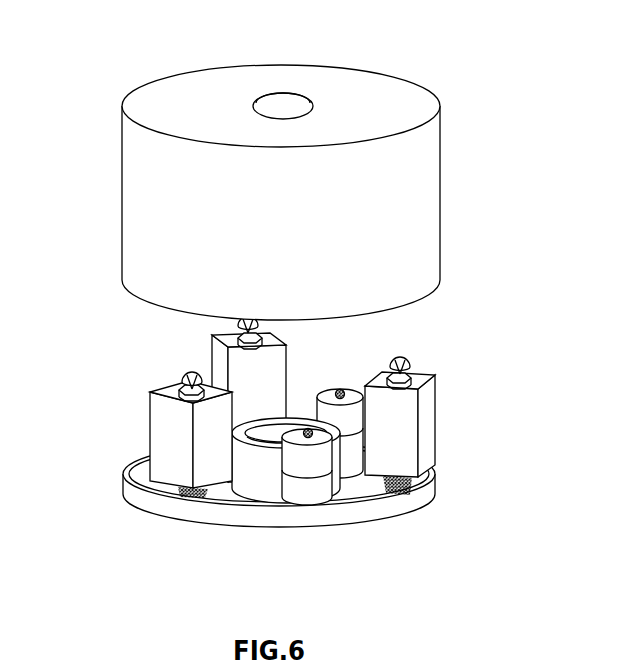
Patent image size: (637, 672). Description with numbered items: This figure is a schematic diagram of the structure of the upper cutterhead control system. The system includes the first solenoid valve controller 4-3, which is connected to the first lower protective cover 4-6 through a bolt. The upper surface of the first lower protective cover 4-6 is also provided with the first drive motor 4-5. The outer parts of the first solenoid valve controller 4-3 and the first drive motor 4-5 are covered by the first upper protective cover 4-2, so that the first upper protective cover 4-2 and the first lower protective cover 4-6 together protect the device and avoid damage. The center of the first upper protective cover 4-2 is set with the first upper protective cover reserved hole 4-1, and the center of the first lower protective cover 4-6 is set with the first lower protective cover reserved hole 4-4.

The first upper protective cover reserved hole 4-1 is at (288, 108).
The first upper protective cover 4-2 is at (160, 192).
The first solenoid valve controller 4-3 is at (163, 432).
The first lower protective cover reserved hole 4-4 is at (257, 477).
The first drive motor 4-5 is at (310, 492).
The first lower protective cover 4-6 is at (360, 512).